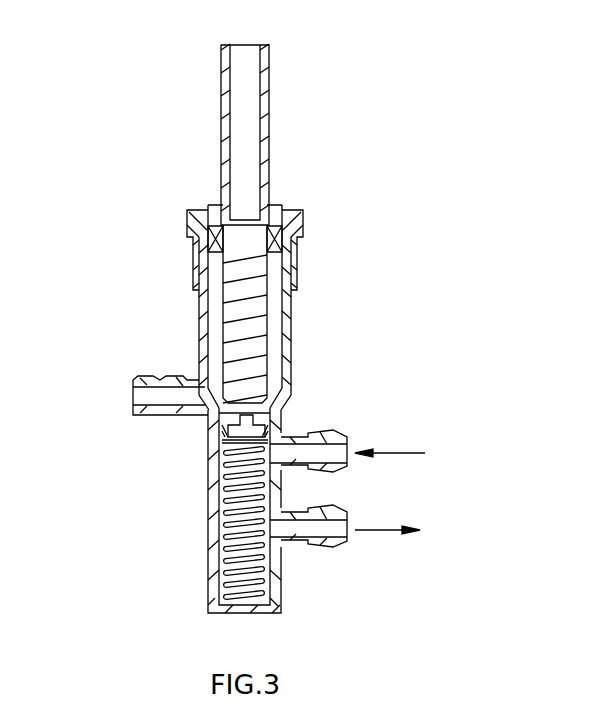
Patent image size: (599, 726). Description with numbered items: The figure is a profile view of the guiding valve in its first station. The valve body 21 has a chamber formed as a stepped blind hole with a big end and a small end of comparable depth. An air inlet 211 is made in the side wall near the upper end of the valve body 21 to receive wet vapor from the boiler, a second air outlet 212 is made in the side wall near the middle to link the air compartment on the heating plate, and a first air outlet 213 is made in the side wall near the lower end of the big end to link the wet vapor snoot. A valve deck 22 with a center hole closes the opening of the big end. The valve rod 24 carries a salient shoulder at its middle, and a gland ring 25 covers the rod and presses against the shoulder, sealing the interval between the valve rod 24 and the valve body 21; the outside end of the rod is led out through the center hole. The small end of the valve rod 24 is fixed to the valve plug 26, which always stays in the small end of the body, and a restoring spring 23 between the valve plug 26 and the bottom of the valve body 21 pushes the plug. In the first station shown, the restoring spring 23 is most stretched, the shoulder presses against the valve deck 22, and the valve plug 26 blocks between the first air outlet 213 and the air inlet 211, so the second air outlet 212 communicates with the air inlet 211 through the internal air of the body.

The valve body 21 is at (199, 325).
The valve deck 22 is at (187, 208).
The restoring spring 23 is at (227, 564).
The valve rod 24 is at (270, 115).
The gland ring 25 is at (280, 242).
The valve plug 26 is at (268, 420).
The air inlet 211 is at (308, 455).
The second air outlet 212 is at (308, 530).
The first air outlet 213 is at (170, 398).